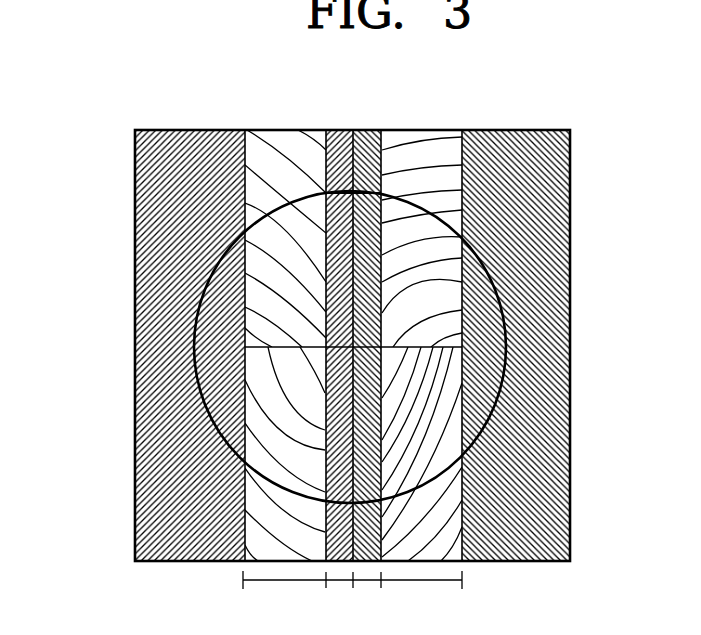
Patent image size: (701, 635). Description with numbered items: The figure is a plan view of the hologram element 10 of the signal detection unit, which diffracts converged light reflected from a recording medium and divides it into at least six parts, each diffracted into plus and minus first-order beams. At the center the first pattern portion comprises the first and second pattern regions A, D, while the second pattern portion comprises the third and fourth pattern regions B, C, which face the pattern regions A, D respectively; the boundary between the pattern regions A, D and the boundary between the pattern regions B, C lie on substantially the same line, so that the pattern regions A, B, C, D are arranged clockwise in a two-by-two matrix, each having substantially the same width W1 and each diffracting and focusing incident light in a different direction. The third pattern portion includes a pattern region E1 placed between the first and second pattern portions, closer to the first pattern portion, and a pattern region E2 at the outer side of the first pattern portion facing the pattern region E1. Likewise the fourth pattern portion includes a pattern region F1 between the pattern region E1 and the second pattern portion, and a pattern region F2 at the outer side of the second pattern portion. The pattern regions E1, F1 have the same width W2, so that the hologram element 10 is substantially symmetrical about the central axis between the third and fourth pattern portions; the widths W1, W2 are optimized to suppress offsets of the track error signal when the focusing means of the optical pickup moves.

The hologram element 10 is at (115, 170).
The pattern region E2 is at (190, 345).
The pattern region E1 is at (339, 345).
The pattern region F1 is at (367, 345).
The pattern region F2 is at (515, 345).
The first pattern region A is at (285, 238).
The third pattern region B is at (422, 242).
The fourth pattern region C is at (422, 454).
The second pattern region D is at (285, 454).
The width of the pattern regions W1 is at (352, 588).
The width of pattern regions E1 and F1 W2 is at (357, 588).